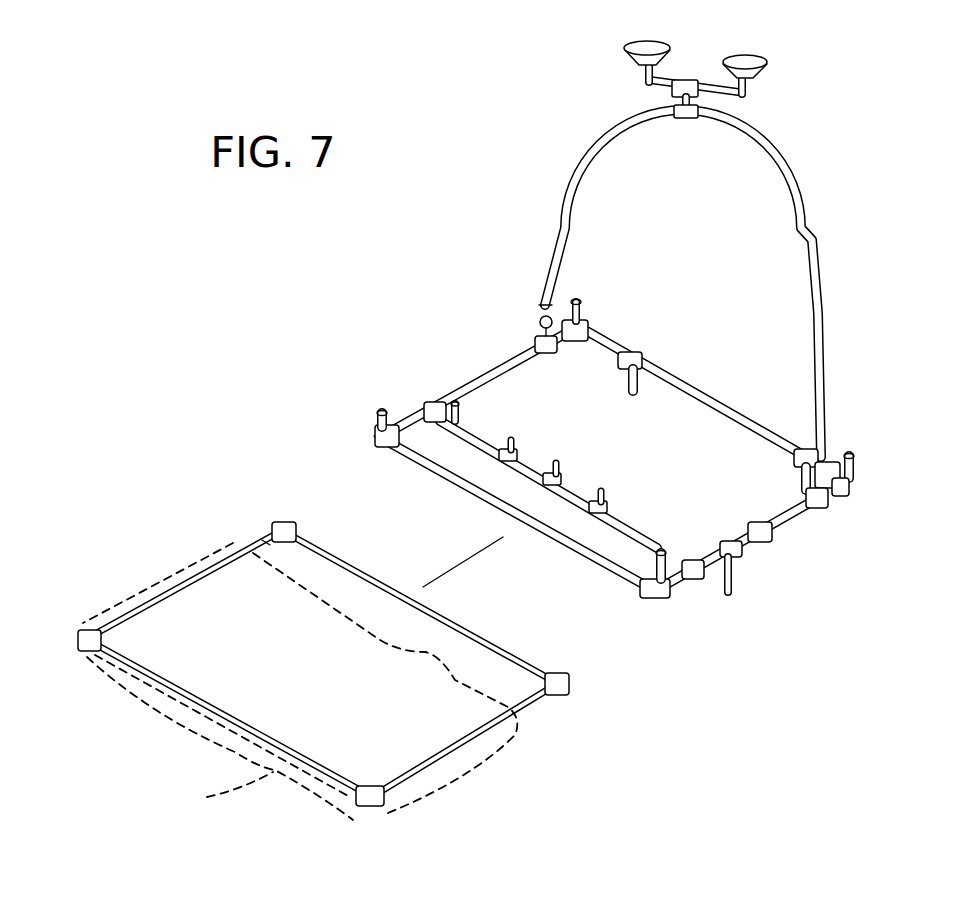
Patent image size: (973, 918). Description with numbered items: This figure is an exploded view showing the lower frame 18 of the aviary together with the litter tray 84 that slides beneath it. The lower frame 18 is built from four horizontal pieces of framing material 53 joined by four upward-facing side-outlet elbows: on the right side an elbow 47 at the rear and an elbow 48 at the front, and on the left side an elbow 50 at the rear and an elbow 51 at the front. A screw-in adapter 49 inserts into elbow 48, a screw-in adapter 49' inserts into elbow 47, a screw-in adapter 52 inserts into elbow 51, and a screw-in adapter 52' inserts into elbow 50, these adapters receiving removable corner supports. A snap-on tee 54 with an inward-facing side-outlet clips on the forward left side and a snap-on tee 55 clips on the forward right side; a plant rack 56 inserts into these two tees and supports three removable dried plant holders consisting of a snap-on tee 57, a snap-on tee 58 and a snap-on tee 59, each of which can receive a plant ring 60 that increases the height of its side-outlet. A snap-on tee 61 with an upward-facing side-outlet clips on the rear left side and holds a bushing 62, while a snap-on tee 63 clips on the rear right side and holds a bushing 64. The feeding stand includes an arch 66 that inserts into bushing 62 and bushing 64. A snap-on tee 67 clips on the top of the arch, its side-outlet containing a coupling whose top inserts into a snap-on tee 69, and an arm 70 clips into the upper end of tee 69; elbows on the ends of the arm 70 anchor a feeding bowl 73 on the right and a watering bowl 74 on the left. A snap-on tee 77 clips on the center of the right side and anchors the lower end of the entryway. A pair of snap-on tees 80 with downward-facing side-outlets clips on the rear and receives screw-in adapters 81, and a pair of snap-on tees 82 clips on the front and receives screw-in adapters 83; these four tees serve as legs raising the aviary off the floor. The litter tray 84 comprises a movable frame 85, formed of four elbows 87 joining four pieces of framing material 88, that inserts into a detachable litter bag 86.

The lower frame 18 is at (345, 450).
The side-outlet elbow 47 is at (852, 490).
The side-outlet elbow 48 is at (648, 592).
The screw-in adapter 49 is at (605, 587).
The screw-in adapter 49' is at (903, 474).
The side-outlet elbow 50 is at (592, 326).
The side-outlet elbow 51 is at (374, 430).
The screw-in adapter 52 is at (356, 371).
The screw-in adapter 52' is at (611, 282).
The horizontal pieces of framing material 53 is at (520, 348).
The snap-on tee 54 is at (425, 411).
The snap-on tee 55 is at (700, 562).
The plant rack 56 is at (376, 446).
The snap-on tee 57 is at (497, 447).
The snap-on tee 58 is at (540, 465).
The snap-on tee 59 is at (587, 553).
The plant ring 60 is at (558, 472).
The snap-on tee 61 is at (541, 337).
The bushing 62 is at (542, 315).
The snap-on tee 63 is at (828, 505).
The bushing 64 is at (837, 445).
The arch 66 is at (808, 225).
The snap-on tee 67 is at (681, 118).
The snap-on tee 69 is at (699, 108).
The arm 70 is at (662, 90).
The feeding bowl 73 is at (760, 55).
The watering bowl 74 is at (624, 60).
The snap-on tee 77 is at (782, 527).
The snap-on tees 80 is at (636, 356).
The screw-in adapters 81 is at (630, 380).
The snap-on tees 82 is at (447, 403).
The screw-in adapters 83 is at (460, 422).
The litter tray 84 is at (518, 763).
The movable frame 85 is at (262, 540).
The litter bag 86 is at (300, 681).
The elbows 87 is at (285, 528).
The framing material 88 is at (160, 590).